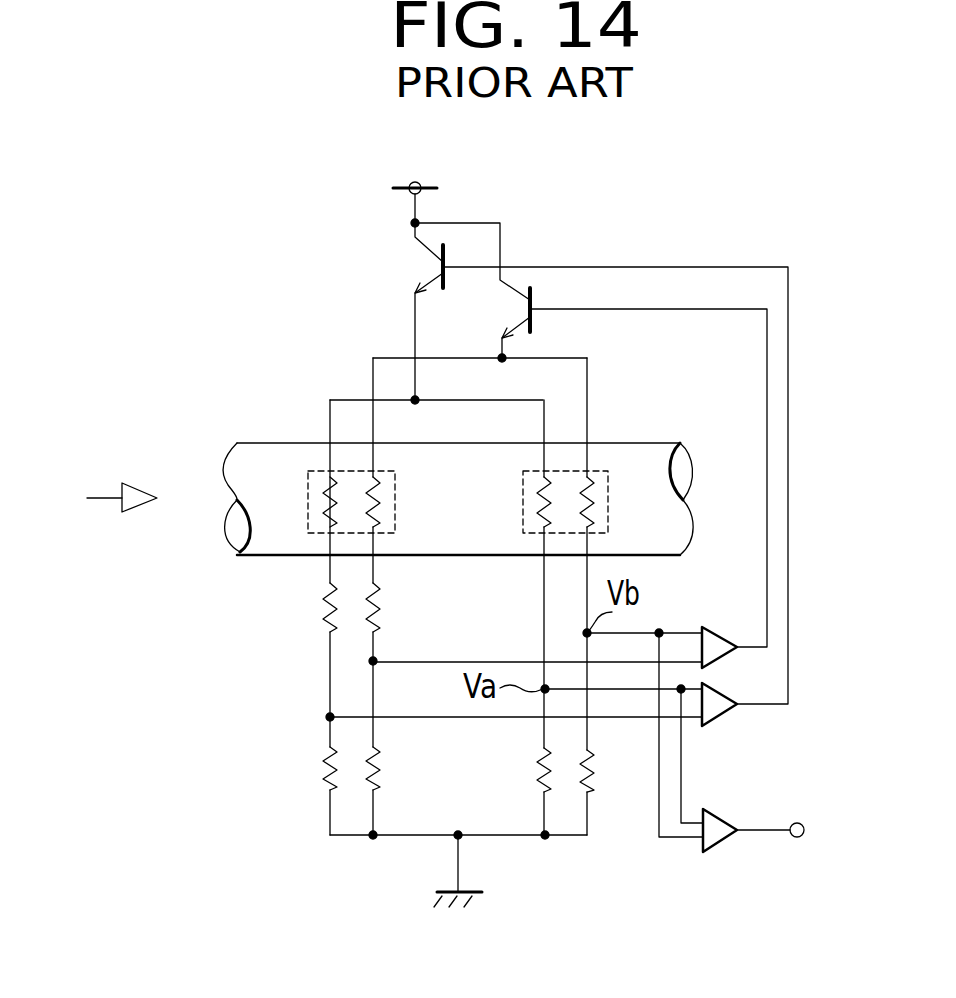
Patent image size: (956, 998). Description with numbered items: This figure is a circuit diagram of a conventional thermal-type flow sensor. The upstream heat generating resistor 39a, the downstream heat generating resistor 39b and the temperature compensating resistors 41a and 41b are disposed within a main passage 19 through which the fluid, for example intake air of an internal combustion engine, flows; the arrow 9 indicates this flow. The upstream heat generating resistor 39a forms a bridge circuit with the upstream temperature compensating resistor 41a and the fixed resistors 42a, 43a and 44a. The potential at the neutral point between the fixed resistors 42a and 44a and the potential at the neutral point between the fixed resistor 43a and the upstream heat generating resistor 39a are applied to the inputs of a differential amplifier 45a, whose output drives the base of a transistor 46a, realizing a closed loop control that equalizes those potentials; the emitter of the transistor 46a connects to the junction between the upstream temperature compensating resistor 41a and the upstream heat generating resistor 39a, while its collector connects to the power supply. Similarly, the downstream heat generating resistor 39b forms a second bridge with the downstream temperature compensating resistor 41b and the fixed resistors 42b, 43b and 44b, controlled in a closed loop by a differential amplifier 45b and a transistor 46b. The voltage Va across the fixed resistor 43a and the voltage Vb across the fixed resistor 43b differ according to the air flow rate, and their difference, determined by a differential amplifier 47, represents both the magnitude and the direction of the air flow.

The input torque 9 is at (108, 498).
The main passage 19 is at (462, 555).
The upstream heat generating resistor 39a is at (546, 492).
The downstream heat generating resistor 39b is at (592, 492).
The upstream temperature compensating resistor 41a is at (330, 500).
The downstream temperature compensating resistor 41b is at (365, 500).
The fixed resistor 42a is at (326, 604).
The fixed resistor 42b is at (380, 612).
The fixed resistor 43a is at (538, 757).
The fixed resistor 43b is at (594, 765).
The fixed resistor 44a is at (325, 770).
The fixed resistor 44b is at (380, 768).
The differential amplifier 45a is at (728, 684).
The differential amplifier 45b is at (724, 625).
The transistor 46a is at (415, 267).
The transistor 46b is at (538, 297).
The differential amplifier 47 is at (725, 812).